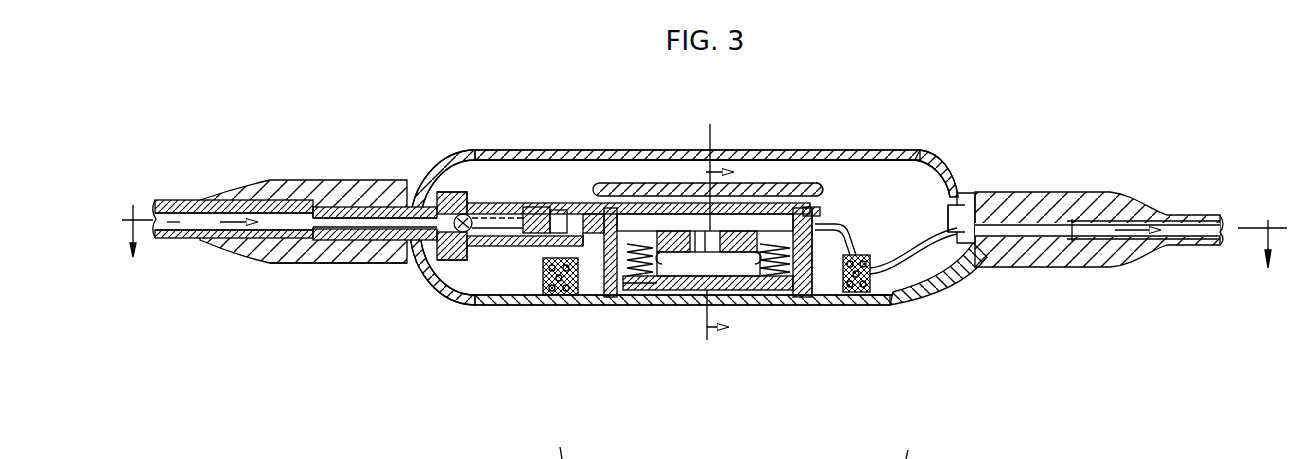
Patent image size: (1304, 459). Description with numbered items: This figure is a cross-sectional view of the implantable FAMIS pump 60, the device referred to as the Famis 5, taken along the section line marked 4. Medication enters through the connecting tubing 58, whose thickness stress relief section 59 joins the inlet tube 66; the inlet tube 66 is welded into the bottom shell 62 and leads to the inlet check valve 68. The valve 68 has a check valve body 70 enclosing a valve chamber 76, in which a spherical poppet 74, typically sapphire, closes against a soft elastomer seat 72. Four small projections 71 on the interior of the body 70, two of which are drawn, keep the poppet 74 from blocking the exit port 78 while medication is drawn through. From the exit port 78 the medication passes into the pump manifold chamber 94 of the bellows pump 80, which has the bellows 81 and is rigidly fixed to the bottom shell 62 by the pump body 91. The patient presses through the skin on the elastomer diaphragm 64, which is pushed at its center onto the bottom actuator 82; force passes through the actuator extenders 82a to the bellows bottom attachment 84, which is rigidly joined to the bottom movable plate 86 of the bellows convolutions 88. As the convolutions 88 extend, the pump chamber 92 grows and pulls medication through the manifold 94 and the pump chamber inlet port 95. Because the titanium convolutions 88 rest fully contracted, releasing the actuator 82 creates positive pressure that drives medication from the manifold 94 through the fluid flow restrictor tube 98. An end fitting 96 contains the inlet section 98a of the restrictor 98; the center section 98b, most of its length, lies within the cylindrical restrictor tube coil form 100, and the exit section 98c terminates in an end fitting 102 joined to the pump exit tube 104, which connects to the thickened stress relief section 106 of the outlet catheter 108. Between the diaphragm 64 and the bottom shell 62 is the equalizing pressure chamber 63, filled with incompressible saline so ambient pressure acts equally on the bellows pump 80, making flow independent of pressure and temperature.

The section line 4- 4 is at (700, 236).
The Famis 5 is at (719, 235).
The connecting tubing 58 is at (190, 199).
The thickness stress relief section 59 is at (325, 180).
The pump 60 is at (751, 147).
The bottom shell 62 is at (547, 308).
The equalizing pressure chamber 63 is at (930, 197).
The elastomer diaphragm 64 is at (598, 150).
The inlet tube 66 is at (318, 263).
The inlet check valve 68 is at (520, 197).
The check valve body 70 is at (500, 225).
The projections 71 is at (498, 205).
The elastomer seat 72 is at (455, 214).
The spherical poppet 74 is at (467, 270).
The valve chamber 76 is at (500, 232).
The exit port 78 is at (551, 206).
The bellows pump 80 is at (822, 162).
The bellows 81 is at (637, 276).
The bottom actuator 82 is at (814, 175).
The actuator extenders 82a is at (632, 183).
The bellows bottom attachment 84 is at (696, 303).
The bottom movable plate 86 is at (778, 303).
The bellows convolutions 88 is at (663, 303).
The pump body 91 is at (828, 305).
The pump chamber 92 is at (680, 303).
The pump manifold chamber 94 is at (679, 214).
The pump chamber inlet port 95 is at (751, 303).
The end fitting 96 is at (818, 207).
The fluid flow restrictor tube 98 is at (863, 257).
The inlet section 98a is at (838, 225).
The center section 98b is at (892, 300).
The exit section 98c is at (958, 296).
The restrictor tube coil form 100 is at (590, 292).
The end fitting 102 is at (956, 192).
The pump exit tube 104 is at (1075, 242).
The thickened stress relief section 106 is at (1063, 192).
The outlet catheter 108 is at (1192, 214).